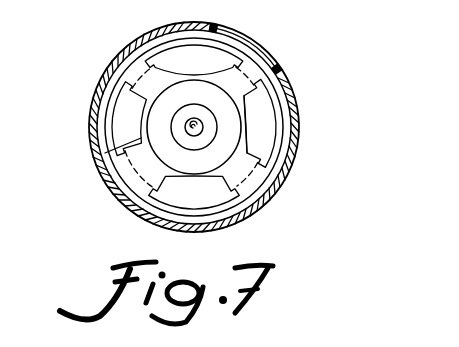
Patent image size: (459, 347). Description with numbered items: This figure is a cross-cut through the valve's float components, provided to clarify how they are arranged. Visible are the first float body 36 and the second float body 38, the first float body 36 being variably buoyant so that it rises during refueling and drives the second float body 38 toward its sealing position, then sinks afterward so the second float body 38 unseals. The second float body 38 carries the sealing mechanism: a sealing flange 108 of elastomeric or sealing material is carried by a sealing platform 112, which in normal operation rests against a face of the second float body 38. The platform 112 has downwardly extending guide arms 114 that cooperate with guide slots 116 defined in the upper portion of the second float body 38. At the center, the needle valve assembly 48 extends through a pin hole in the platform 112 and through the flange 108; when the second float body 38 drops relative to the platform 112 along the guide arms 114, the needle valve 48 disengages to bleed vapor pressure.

The first float body 36 is at (295, 86).
The second float body 38 is at (224, 25).
The needle valve assembly 48 is at (196, 124).
The sealing flange 108 is at (232, 123).
The sealing platform 112 is at (96, 158).
The guide arms 114 is at (241, 157).
The guide slots 116 is at (268, 195).